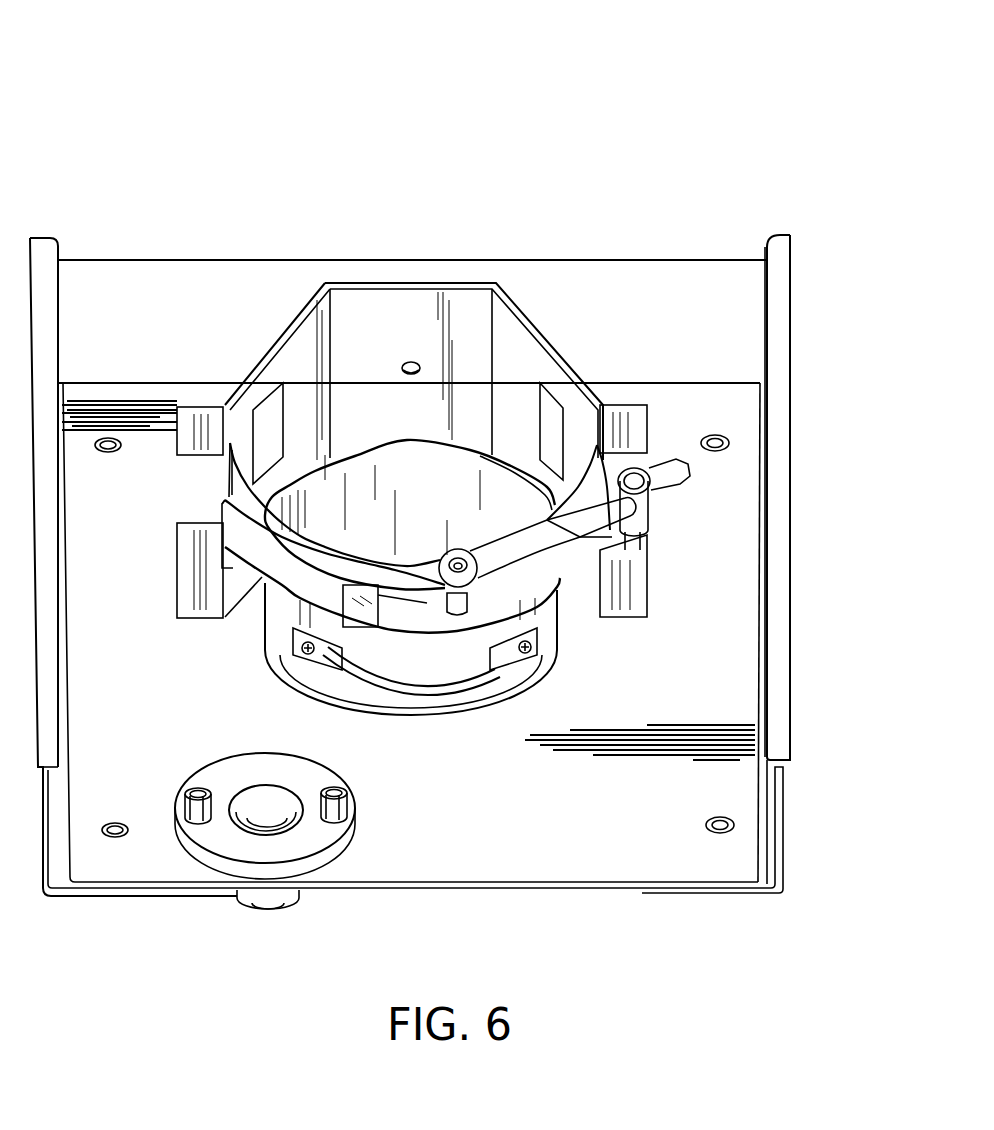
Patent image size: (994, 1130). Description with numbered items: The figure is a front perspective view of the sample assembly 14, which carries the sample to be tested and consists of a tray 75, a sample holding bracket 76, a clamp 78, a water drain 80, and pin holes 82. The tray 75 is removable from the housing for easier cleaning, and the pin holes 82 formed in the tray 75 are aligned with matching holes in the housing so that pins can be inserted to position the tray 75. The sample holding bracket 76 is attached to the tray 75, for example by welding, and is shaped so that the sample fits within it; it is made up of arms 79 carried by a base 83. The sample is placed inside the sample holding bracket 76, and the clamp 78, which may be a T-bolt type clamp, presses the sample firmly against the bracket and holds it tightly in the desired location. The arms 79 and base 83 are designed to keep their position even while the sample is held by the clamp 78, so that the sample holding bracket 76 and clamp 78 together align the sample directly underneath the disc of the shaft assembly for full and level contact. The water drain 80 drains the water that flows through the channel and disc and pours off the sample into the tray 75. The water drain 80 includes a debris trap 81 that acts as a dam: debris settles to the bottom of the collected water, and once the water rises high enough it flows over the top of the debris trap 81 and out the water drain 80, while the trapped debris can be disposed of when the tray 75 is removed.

The sample assembly 14 is at (165, 67).
The tray 75 is at (415, 262).
The sample holding bracket 76 is at (526, 283).
The clamp 78 is at (552, 547).
The arms 79 is at (270, 345).
The water drain 80 is at (280, 897).
The debris trap 81 is at (233, 853).
The pin holes 82 is at (110, 438).
The base 83 is at (460, 283).